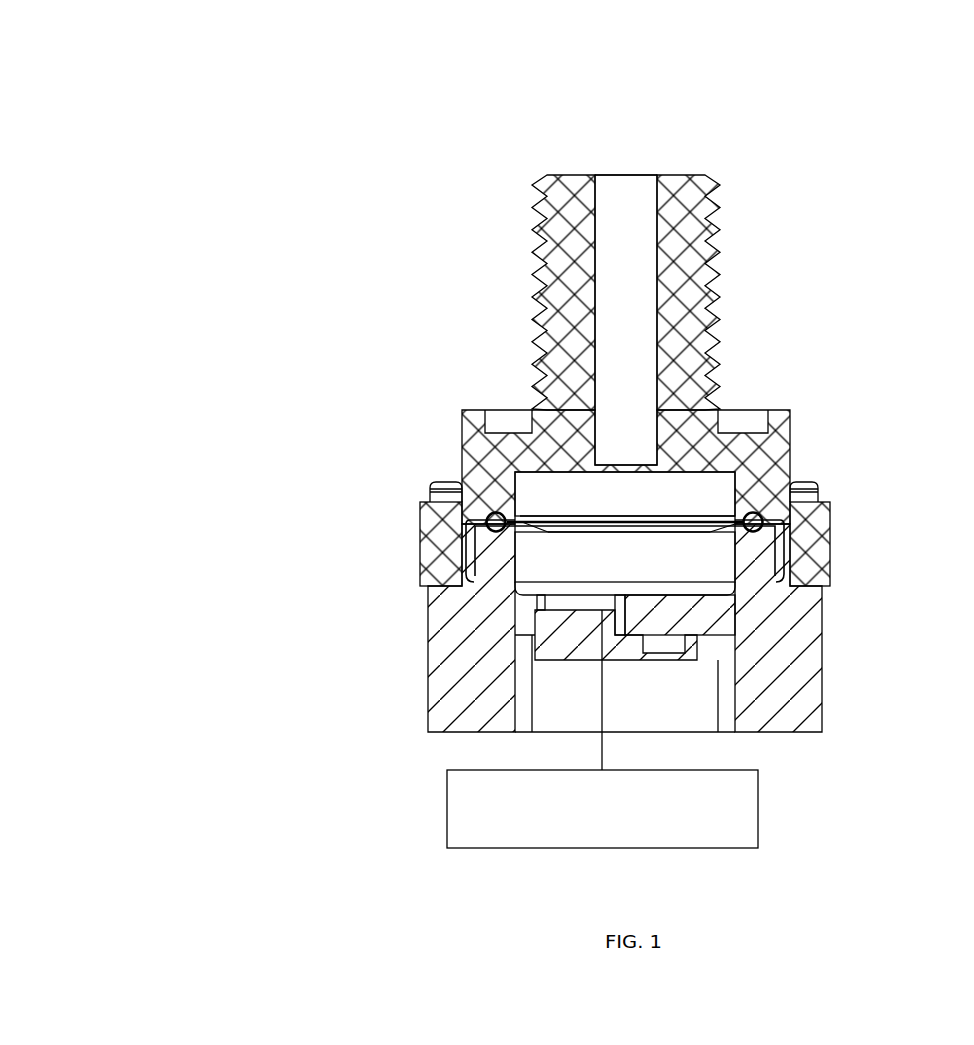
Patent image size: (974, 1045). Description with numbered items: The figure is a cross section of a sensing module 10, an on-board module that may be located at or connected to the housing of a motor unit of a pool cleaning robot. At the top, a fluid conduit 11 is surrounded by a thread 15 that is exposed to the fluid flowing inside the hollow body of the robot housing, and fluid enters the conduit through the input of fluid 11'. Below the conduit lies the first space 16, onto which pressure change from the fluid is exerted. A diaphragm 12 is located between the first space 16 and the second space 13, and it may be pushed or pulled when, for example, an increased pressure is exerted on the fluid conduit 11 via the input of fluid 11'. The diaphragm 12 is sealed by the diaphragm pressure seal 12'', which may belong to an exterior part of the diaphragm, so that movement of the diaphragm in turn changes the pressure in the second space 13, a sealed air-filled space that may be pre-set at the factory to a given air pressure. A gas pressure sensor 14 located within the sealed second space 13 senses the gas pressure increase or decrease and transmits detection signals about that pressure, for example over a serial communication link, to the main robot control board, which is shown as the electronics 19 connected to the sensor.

The sensing module 10 is at (378, 362).
The fluid conduit 11 is at (626, 320).
The input of fluid 11' is at (492, 100).
The diaphragm 12 is at (512, 477).
The diaphragm pressure seal 12'' is at (834, 511).
The second space 13 is at (617, 566).
The gas pressure sensor 14 is at (550, 612).
The thread 15 is at (696, 192).
The first space 16 is at (637, 500).
The electronics 19 is at (602, 729).